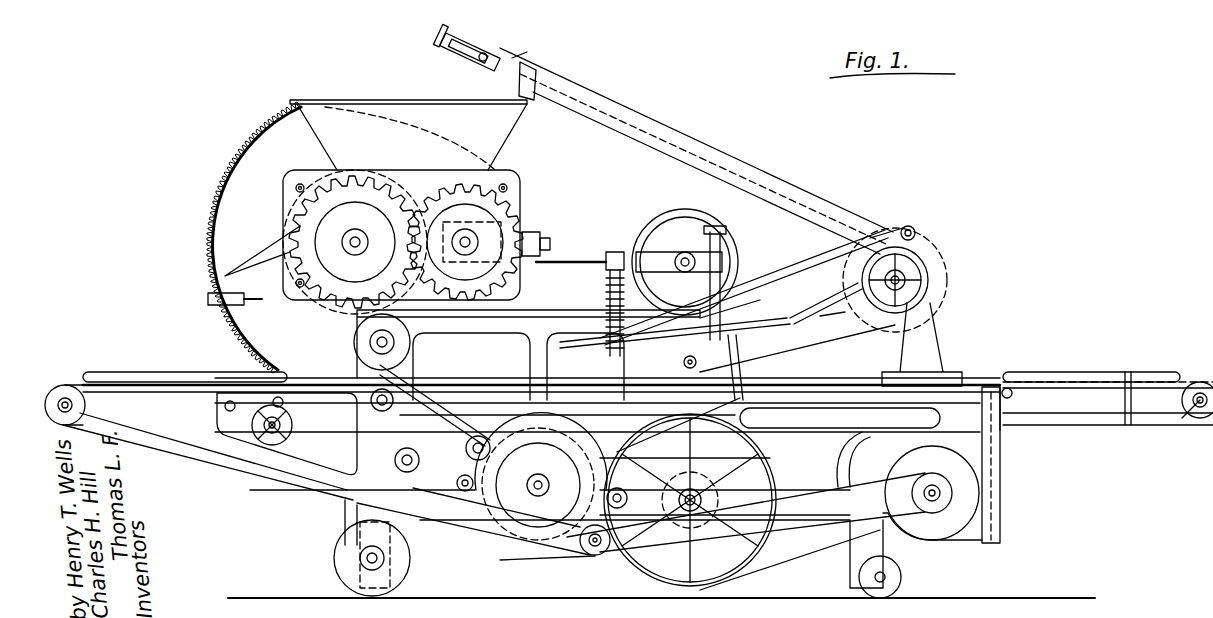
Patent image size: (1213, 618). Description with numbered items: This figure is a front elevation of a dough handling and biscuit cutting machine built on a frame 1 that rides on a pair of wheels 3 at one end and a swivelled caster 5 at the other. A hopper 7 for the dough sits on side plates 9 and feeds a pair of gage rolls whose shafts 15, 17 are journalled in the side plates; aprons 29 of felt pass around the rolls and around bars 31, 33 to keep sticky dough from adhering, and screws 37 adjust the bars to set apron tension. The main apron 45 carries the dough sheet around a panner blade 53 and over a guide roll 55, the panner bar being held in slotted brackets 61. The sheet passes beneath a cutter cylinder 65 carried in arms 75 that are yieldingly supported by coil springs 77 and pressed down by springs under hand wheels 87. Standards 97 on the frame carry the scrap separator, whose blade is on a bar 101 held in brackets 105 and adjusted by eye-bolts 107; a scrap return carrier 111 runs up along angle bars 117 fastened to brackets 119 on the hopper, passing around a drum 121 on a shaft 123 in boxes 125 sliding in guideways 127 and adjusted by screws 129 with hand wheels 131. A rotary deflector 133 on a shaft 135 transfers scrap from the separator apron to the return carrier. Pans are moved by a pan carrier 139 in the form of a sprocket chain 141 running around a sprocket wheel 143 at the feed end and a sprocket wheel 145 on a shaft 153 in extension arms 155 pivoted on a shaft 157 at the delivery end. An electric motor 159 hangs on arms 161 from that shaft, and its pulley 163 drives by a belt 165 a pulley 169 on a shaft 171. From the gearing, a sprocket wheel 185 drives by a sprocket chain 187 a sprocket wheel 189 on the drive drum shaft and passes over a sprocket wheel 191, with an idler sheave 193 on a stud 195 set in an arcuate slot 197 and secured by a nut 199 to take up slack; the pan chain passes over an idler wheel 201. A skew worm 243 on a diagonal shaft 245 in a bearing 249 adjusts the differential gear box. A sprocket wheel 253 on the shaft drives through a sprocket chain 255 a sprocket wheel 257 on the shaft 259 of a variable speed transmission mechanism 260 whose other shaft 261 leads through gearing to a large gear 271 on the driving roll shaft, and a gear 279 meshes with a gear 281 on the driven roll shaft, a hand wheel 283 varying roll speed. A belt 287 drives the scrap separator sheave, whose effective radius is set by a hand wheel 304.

The frame 1 is at (798, 492).
The wheels 3 is at (335, 568).
The swivelled caster 5 is at (903, 578).
The hopper 7 is at (492, 126).
The side plates 9 is at (520, 192).
The shaft 15 is at (355, 242).
The shaft 17 is at (465, 240).
The aprons 29 is at (262, 258).
The bar 31 is at (210, 305).
The bar 33 is at (545, 244).
The screws 37 is at (232, 372).
The main apron 45 is at (480, 376).
The panner blade 53 is at (855, 368).
The guide roll 55 is at (628, 308).
The brackets 61 is at (766, 322).
The cylinder 65 is at (683, 210).
The arms 75 is at (655, 226).
The coil springs 77 is at (606, 262).
The hand wheels 87 is at (718, 228).
The standards 97 is at (932, 346).
The bar 101 is at (848, 232).
The brackets 105 is at (840, 318).
The eye-bolts 107 is at (826, 294).
The scrap return carrier 111 is at (615, 140).
The angle bars 117 is at (662, 124).
The brackets 119 is at (532, 72).
The drum 121 is at (458, 60).
The shaft 123 is at (480, 68).
The boxes 125 is at (487, 52).
The guideways 127 is at (452, 52).
The screws 129 is at (468, 32).
The hand wheels 131 is at (440, 34).
The rotary deflector 133 is at (916, 228).
The shaft 135 is at (925, 242).
The pan carrier 139 is at (298, 500).
The sprocket chain 141 is at (798, 430).
The sprocket wheel 143 is at (55, 385).
The sprocket wheel 145 is at (1200, 382).
The shaft 153 is at (1195, 418).
The extension arms 155 is at (1148, 424).
The shaft 157 is at (1005, 388).
The electric motor 159 is at (965, 505).
The arms 161 is at (1000, 460).
The pulley 163 is at (958, 492).
The belt 165 is at (790, 580).
The pulley 169 is at (780, 528).
The shaft 171 is at (708, 502).
The sprocket wheel 185 is at (540, 556).
The sprocket chain 187 is at (688, 355).
The sprocket wheel 189 is at (355, 352).
The sprocket wheel 191 is at (722, 310).
The idler sheave 193 is at (470, 432).
The stud 195 is at (538, 485).
The arcuate slot 197 is at (578, 416).
The nut 199 is at (480, 538).
The idler wheel 201 is at (603, 554).
The skew worm 243 is at (560, 378).
The shaft 245 is at (567, 419).
The bearing 249 is at (749, 367).
The sprocket wheel 253 is at (704, 533).
The sprocket chain 255 is at (643, 457).
The sprocket wheel 257 is at (440, 444).
The shaft 259 is at (405, 472).
The variable speed transmission mechanism 260 is at (340, 500).
The shaft 261 is at (290, 462).
The large gear 271 is at (235, 170).
The gear 279 is at (300, 226).
The gear 281 is at (445, 200).
The hand wheel 283 is at (252, 428).
The belt 287 is at (785, 264).
The hand wheel 304 is at (947, 314).